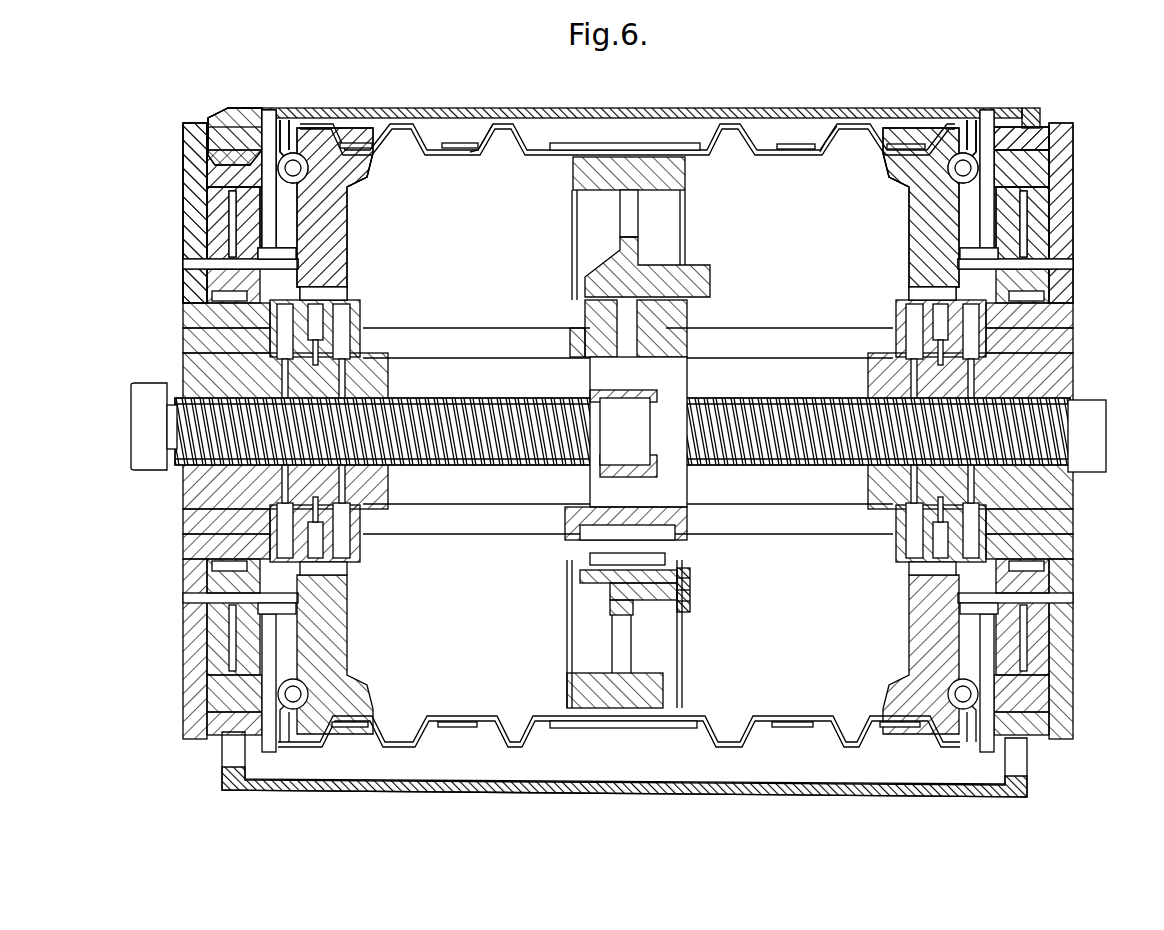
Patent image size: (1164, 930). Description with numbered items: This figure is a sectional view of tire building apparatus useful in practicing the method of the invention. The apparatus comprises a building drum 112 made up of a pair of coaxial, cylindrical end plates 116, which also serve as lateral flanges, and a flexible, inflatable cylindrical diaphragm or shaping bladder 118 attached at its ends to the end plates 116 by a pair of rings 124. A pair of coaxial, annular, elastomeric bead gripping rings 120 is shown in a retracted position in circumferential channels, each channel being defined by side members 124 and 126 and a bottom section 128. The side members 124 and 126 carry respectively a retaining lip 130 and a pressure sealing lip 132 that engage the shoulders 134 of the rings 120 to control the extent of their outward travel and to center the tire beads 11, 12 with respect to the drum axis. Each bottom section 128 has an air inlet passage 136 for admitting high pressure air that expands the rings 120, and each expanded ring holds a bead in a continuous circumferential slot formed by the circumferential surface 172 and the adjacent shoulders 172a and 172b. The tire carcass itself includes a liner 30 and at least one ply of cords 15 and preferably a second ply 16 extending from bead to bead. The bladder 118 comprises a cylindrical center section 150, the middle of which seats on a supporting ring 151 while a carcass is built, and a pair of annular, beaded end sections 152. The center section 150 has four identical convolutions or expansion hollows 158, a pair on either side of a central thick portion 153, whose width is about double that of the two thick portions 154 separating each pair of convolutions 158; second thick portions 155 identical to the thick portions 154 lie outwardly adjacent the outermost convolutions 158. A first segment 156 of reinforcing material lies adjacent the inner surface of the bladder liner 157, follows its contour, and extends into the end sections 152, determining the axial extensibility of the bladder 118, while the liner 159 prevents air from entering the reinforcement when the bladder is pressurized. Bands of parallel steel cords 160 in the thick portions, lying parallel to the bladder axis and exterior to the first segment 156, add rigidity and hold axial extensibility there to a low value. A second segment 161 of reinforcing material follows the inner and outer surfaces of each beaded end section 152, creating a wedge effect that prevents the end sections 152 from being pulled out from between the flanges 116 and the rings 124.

The bead 11 is at (1026, 108).
The bead 12 is at (233, 108).
The liner 30 is at (625, 91).
The ply of cords 15 is at (625, 91).
The second ply 16 is at (527, 108).
The building drum 112 is at (822, 752).
The end plates 116 is at (330, 248).
The inflatable cylindrical diaphragm 118 is at (540, 152).
The bead gripping rings 120 is at (207, 180).
The side member 124 is at (290, 222).
The side member 126 is at (190, 212).
The bottom section 128 is at (215, 228).
The retaining lip 130 is at (270, 113).
The pressure sealing lip 132 is at (183, 140).
The shoulders 134 is at (207, 158).
The air inlet passage 136 is at (200, 262).
The cylindrical center section 150 is at (627, 130).
The supporting ring 151 is at (688, 172).
The beaded end sections 152 is at (310, 180).
The central thick portion 153 is at (560, 150).
The thick portions 154 is at (468, 155).
The second thick portions 155 is at (350, 172).
The first segment of reinforcing material 156 is at (707, 128).
The liner 157 is at (815, 160).
The convolutions 158 is at (404, 126).
The liner 159 is at (335, 125).
The steel cords 160 is at (360, 142).
The second segment of reinforcing material 161 is at (298, 125).
The circumferential surface 172 is at (235, 136).
The shoulder 172a is at (218, 140).
The shoulder 172b is at (262, 128).